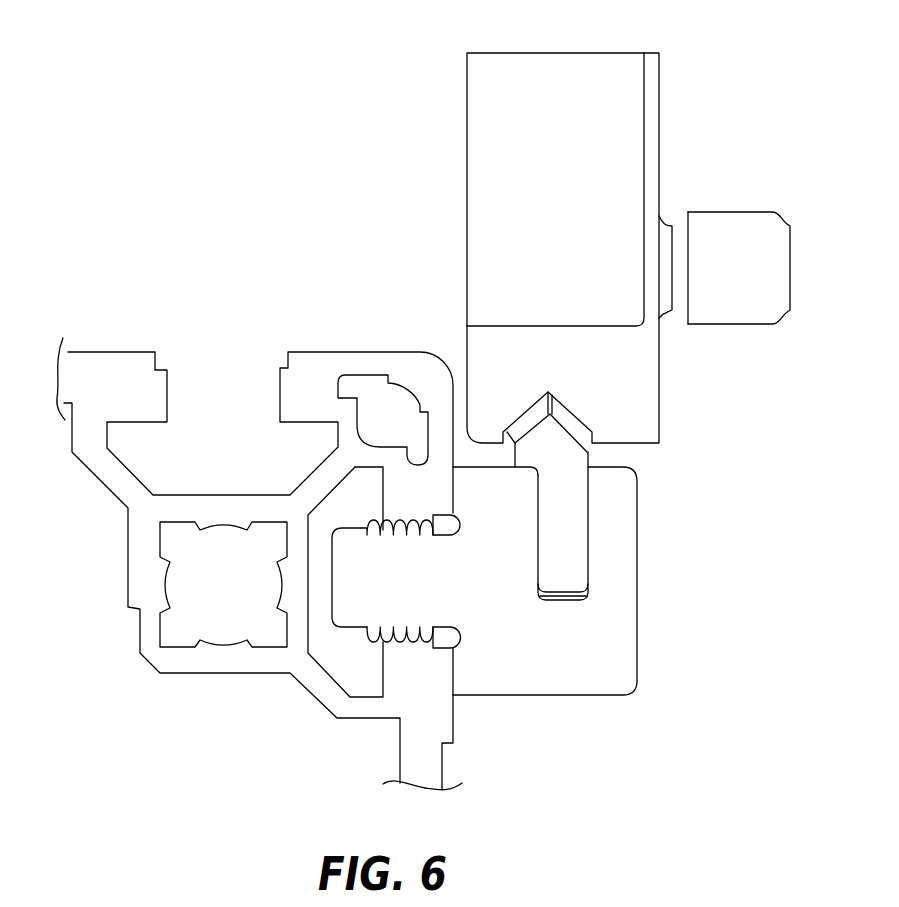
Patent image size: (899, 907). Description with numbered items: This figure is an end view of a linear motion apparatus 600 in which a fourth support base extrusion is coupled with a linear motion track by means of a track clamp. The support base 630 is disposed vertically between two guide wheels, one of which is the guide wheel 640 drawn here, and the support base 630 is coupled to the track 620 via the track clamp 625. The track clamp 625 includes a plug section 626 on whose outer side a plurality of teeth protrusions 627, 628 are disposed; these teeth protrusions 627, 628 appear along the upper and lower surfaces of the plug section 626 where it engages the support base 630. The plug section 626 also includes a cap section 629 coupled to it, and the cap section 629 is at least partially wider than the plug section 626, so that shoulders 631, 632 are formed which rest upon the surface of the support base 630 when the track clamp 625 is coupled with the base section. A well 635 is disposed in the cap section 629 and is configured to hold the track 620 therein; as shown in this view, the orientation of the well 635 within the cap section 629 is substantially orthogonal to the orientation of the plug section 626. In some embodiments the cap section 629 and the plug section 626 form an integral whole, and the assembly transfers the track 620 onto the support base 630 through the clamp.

The linear motion apparatus 600 is at (157, 40).
The track 620 is at (598, 503).
The track clamp 625 is at (646, 563).
The plug section 626 is at (428, 595).
The teeth protrusion 627 is at (372, 508).
The teeth protrusion 628 is at (372, 659).
The cap section 629 is at (551, 643).
The support base 630 is at (105, 352).
The shoulder 631 is at (503, 688).
The shoulder 632 is at (515, 502).
The well 635 is at (568, 615).
The guide wheel 640 is at (577, 197).